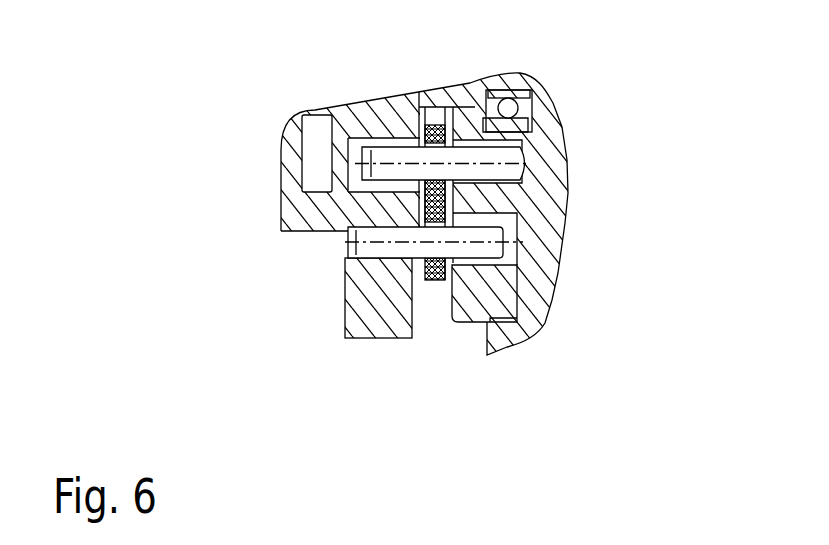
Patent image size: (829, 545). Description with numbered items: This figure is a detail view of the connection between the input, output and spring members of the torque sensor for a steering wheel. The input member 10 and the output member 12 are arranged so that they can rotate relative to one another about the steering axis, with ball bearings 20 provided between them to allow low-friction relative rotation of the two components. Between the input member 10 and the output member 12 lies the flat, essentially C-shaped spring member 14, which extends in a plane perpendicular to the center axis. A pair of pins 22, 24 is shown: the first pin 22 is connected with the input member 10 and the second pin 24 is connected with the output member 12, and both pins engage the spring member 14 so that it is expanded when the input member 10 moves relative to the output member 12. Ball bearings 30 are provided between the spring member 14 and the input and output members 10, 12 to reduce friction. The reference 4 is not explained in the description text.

The housing 4 is at (528, 307).
The input member 10 is at (482, 300).
The output member 12 is at (383, 295).
The spring member 14 is at (450, 191).
The ball bearings 20 is at (523, 73).
The first pin 22 is at (450, 240).
The second pin 24 is at (346, 245).
The ball bearings 30 is at (427, 107).